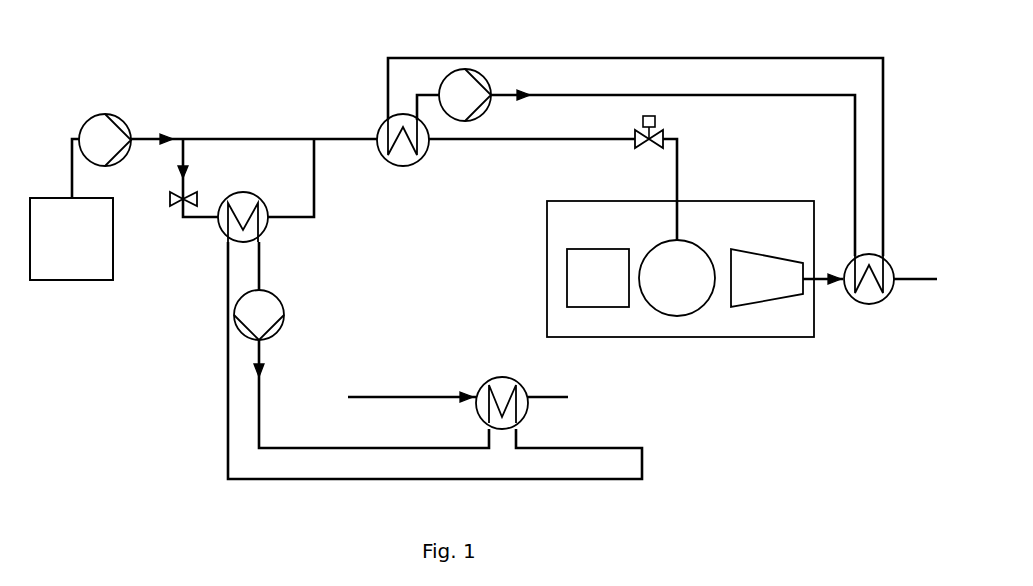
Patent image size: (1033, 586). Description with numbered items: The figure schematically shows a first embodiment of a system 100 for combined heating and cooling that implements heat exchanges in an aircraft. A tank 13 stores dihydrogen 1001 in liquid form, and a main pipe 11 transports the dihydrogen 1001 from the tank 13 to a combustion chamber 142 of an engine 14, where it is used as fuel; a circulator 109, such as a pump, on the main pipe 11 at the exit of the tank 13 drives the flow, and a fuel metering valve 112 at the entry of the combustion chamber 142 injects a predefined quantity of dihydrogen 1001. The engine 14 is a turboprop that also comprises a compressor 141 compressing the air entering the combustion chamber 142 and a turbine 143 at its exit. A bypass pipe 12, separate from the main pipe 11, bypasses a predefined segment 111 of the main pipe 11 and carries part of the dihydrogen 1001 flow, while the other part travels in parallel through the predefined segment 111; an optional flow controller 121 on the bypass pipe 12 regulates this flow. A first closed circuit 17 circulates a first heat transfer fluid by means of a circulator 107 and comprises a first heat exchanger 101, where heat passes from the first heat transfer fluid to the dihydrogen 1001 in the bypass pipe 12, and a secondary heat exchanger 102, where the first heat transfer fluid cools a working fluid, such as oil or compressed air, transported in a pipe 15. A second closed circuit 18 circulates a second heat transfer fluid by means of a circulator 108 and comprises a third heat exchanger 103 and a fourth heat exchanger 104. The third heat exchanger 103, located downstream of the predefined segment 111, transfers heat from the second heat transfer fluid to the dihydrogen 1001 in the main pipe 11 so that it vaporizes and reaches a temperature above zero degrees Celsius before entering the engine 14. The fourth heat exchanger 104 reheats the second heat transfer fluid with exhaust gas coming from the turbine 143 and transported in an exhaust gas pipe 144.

The system for combined heating and cooling 100 is at (152, 55).
The circulator 109 is at (93, 117).
The main pipe 11 is at (150, 127).
The predefined segment 111 is at (232, 128).
The flow controller 121 is at (172, 193).
The first heat exchanger 101 is at (266, 227).
The bypass pipe 12 is at (317, 208).
The tank 13 is at (108, 281).
The dihydrogen 1001 is at (71, 263).
The third heat exchanger 103 is at (422, 163).
The circulator 108 is at (486, 107).
The second closed circuit 18 is at (680, 58).
The fuel metering valve 112 is at (656, 121).
The engine 14 is at (580, 231).
The compressor 141 is at (618, 288).
The combustion chamber 142 is at (697, 288).
The turbine 143 is at (775, 288).
The fourth heat exchanger 104 is at (865, 303).
The exhaust gas pipe 144 is at (917, 281).
The circulator 107 is at (282, 330).
The first closed circuit 17 is at (228, 380).
The pipe 15 is at (410, 397).
The secondary heat exchanger 102 is at (528, 415).